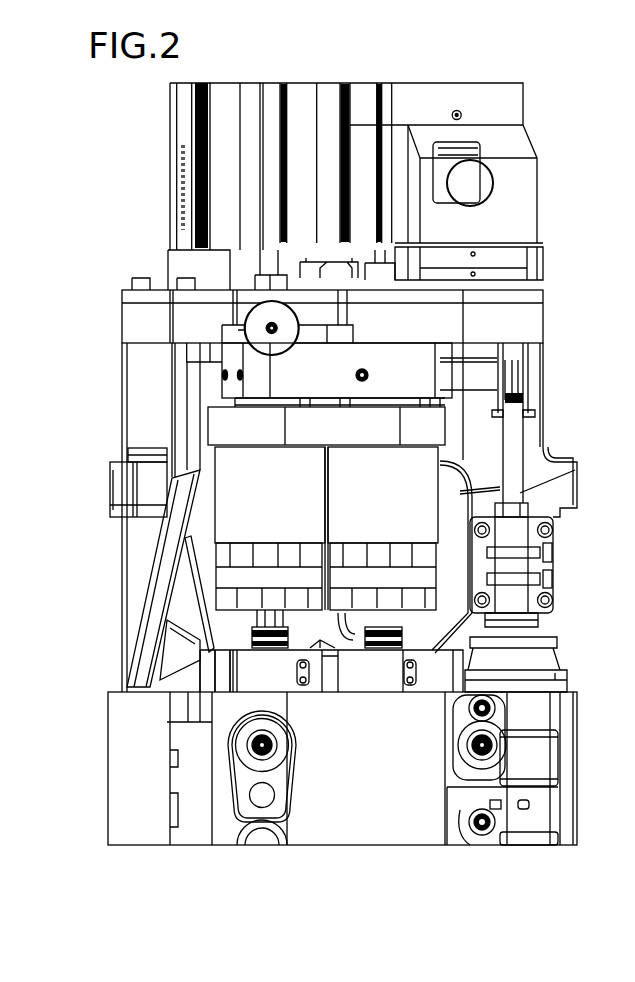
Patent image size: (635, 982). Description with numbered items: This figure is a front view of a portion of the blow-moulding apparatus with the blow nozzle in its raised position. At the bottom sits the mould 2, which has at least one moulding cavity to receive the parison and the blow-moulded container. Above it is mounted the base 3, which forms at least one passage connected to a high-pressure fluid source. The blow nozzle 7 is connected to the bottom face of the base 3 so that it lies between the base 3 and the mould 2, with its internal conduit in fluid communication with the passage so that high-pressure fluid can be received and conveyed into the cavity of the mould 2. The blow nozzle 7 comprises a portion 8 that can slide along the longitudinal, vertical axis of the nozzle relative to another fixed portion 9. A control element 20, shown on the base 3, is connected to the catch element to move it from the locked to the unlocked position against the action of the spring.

The mould 2 is at (398, 803).
In FIG. 2, the base 3 is at (512, 315).
In FIG. 2, the blow nozzle 7 is at (437, 432).
In FIG. 2, the slidable portion 8 is at (397, 497).
In FIG. 2, the fixed portion 9 is at (407, 373).
In FIG. 2, the control element 20 is at (255, 322).